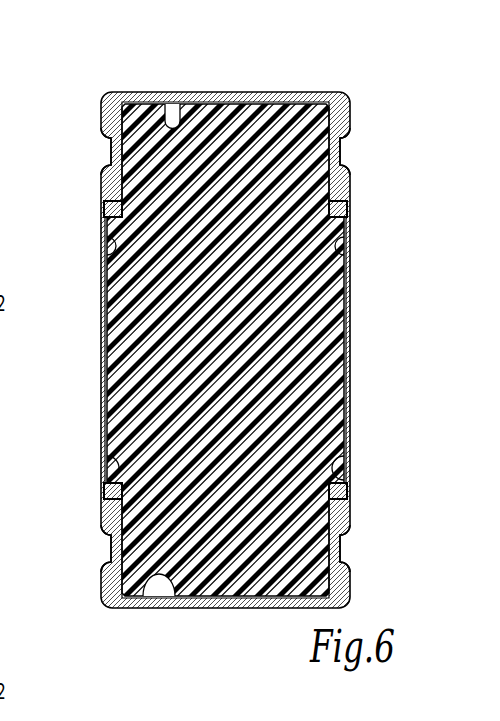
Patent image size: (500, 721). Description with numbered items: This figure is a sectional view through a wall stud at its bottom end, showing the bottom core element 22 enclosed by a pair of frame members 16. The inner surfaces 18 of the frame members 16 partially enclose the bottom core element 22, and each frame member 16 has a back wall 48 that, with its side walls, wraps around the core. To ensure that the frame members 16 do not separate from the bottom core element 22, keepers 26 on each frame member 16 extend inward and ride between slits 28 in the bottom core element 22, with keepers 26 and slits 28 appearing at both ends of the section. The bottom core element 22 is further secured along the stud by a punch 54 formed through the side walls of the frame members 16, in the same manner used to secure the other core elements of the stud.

The frame member 16 is at (233, 60).
The inner surface 18 is at (193, 100).
The bottom core element 22 is at (332, 301).
The keeper 26 is at (110, 252).
The slit 28 is at (104, 200).
The back wall 48 is at (302, 96).
The punch 54 is at (118, 153).